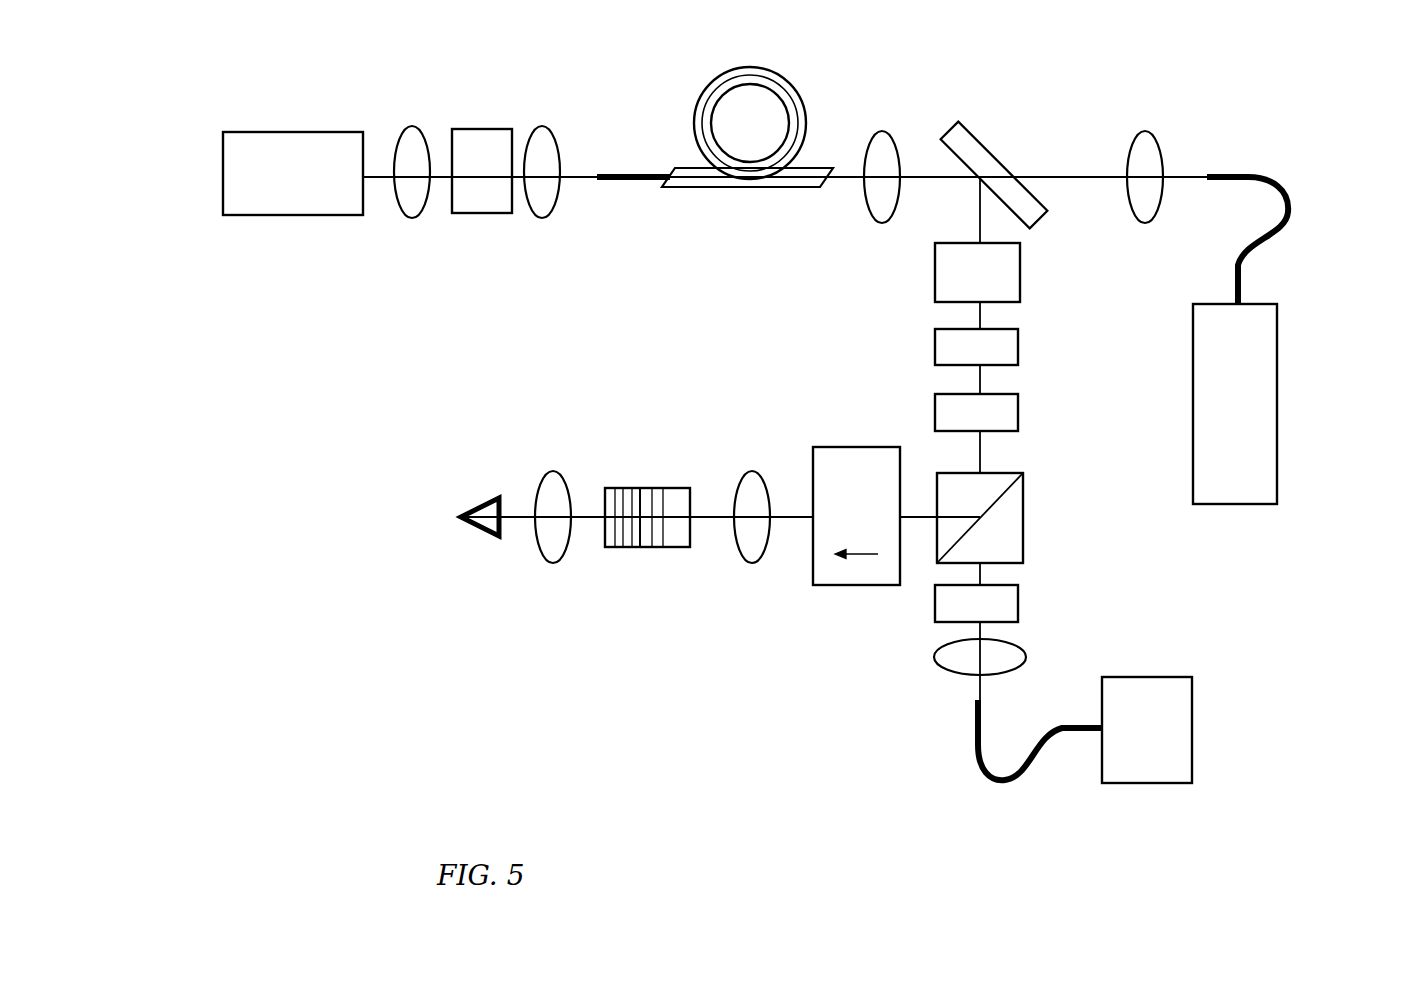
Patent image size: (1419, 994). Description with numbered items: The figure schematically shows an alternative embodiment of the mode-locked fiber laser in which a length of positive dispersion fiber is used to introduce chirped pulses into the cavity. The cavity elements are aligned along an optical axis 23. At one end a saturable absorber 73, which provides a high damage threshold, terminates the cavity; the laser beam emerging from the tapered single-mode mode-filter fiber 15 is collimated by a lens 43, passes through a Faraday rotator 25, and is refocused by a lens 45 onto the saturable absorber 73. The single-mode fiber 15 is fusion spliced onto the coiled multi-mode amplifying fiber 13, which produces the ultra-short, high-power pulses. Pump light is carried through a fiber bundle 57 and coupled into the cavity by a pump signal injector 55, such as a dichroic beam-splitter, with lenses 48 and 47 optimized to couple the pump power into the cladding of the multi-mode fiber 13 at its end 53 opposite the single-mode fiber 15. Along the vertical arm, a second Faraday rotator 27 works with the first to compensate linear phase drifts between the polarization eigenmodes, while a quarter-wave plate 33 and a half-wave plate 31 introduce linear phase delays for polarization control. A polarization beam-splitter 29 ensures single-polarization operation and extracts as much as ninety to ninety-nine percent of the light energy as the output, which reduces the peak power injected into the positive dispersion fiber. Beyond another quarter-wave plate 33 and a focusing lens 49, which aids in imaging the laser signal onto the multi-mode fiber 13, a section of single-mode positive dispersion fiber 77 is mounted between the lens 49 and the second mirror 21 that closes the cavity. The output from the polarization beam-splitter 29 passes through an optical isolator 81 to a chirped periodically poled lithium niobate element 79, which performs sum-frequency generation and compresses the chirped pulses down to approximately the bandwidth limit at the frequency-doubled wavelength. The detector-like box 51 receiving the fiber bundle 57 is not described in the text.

The saturable absorber 73 is at (282, 132).
The lens 45 is at (410, 127).
The Faraday rotator 25 is at (476, 129).
The lens 43 is at (540, 219).
The optical axis 23 is at (578, 175).
The single-mode fiber 15 is at (622, 181).
The multi-mode amplifying fiber 13 is at (800, 104).
The end of the multi-mode fiber 53 is at (822, 188).
The focusing lens 47 is at (885, 131).
The pump signal injector 55 is at (985, 132).
The lens 48 is at (1150, 133).
The fiber bundle 57 is at (1280, 182).
The detector 51 is at (1278, 428).
The Faraday rotator 27 is at (1020, 272).
The quarter-wave plate 33 is at (1018, 348).
The half-wave plate 31 is at (1018, 409).
The polarization beam-splitter 29 is at (1023, 513).
The focusing lens 49 is at (1023, 660).
The positive dispersion fiber 77 is at (988, 773).
The second mirror 21 is at (1192, 713).
The chirped periodically poled LiNbO3 79 is at (628, 548).
The optical isolator 81 is at (855, 586).